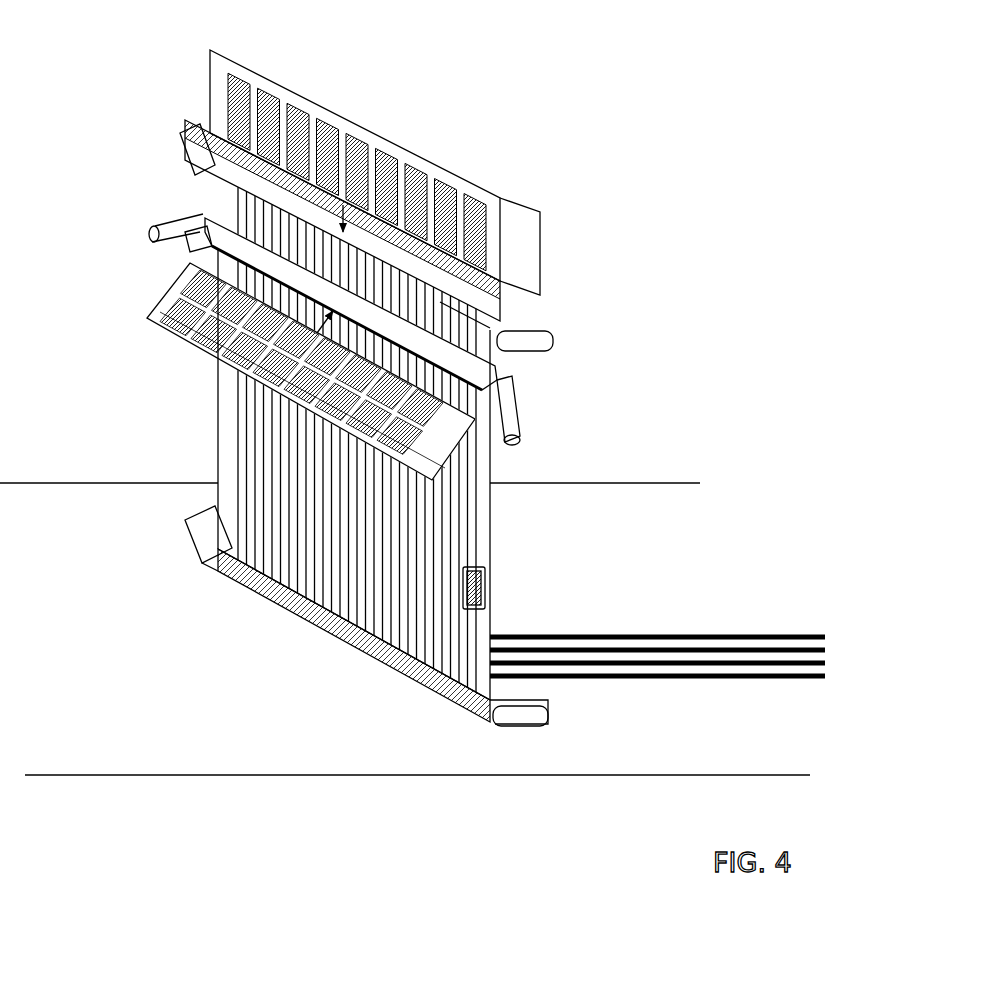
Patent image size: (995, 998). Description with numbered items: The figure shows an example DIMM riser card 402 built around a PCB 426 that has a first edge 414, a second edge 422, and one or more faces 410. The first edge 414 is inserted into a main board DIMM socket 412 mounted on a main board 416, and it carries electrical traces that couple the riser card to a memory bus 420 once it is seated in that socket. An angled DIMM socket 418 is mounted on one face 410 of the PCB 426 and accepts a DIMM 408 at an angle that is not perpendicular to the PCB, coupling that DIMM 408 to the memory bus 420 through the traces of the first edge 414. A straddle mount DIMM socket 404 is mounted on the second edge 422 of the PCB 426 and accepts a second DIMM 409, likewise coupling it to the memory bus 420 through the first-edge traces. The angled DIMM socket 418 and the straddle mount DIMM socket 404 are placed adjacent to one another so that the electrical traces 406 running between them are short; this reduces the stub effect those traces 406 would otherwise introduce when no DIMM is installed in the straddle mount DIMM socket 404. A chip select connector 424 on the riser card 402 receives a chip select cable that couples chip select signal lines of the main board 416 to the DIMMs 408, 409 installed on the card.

The DIMM riser card 402 is at (382, 78).
The straddle mount DIMM socket 404 is at (172, 127).
The electrical traces 406 is at (230, 210).
The DIMM 408 is at (155, 305).
The DIMM 409 is at (480, 188).
The face 410 is at (216, 512).
The main board DIMM socket 412 is at (263, 597).
The first edge 414 is at (340, 620).
The main board 416 is at (448, 830).
The angled DIMM socket 418 is at (508, 382).
The memory bus 420 is at (665, 632).
The second edge 422 is at (462, 330).
The chip select connector 424 is at (483, 562).
The PCB 426 is at (216, 400).